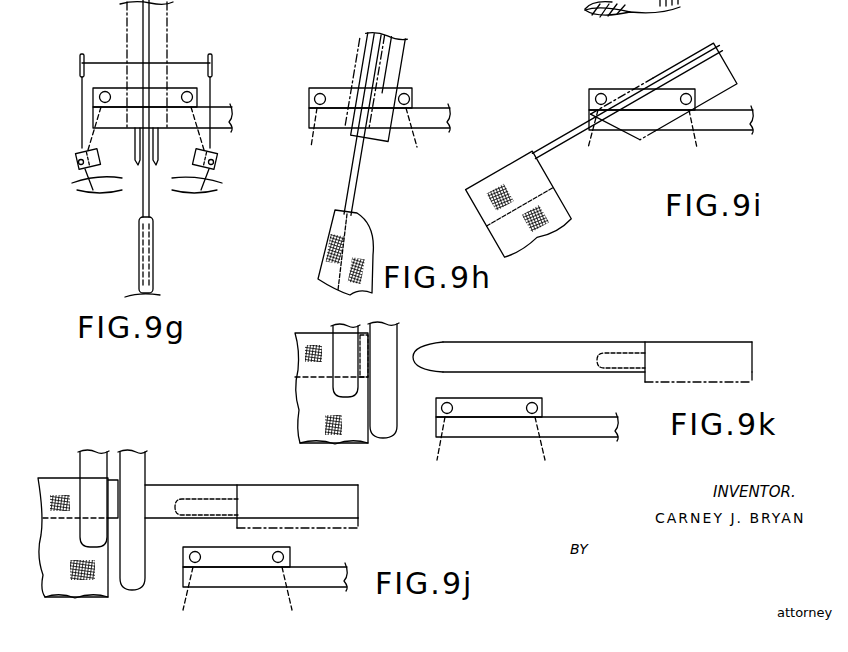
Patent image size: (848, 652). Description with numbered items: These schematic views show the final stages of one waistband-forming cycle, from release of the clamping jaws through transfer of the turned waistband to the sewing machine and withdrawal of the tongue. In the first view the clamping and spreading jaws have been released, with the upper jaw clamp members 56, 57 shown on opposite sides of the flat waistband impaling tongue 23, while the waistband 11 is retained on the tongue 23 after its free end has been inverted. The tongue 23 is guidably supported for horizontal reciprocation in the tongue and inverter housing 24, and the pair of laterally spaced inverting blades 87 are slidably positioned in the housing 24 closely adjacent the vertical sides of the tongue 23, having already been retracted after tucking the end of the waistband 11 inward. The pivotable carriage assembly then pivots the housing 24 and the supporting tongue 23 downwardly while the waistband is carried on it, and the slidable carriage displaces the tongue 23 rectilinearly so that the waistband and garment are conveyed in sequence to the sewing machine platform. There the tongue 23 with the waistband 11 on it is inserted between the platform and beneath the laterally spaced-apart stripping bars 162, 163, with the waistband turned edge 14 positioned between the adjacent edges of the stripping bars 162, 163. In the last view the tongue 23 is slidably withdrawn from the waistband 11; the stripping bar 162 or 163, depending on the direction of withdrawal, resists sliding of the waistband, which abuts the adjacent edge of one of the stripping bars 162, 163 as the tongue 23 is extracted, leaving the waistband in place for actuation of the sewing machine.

In FIG. 9j, the waistband 11 is at (58, 480).
In FIG. 9j, the waistband turned edge 14 is at (120, 500).
In FIG. 9g, the waistband impaling tongue 23 is at (150, 48).
In FIG. 9h, the waistband impaling tongue 23 is at (361, 175).
In FIG. 9i, the waistband impaling tongue 23 is at (604, 148).
In FIG. 9j, the waistband impaling tongue 23 is at (182, 490).
In FIG. 9k, the waistband impaling tongue 23 is at (535, 350).
In FIG. 9g, the tongue and inverter housing 24 is at (126, 50).
In FIG. 9h, the tongue and inverter housing 24 is at (402, 78).
In FIG. 9i, the tongue and inverter housing 24 is at (664, 99).
In FIG. 9j, the tongue and inverter housing 24 is at (297, 506).
In FIG. 9k, the tongue and inverter housing 24 is at (683, 348).
In FIG. 9g, the upper jaw clamp member 56 is at (103, 190).
In FIG. 9g, the upper jaw clamp member 57 is at (190, 190).
In FIG. 9j, the inverting blades 87 is at (207, 498).
In FIG. 9k, the inverting blades 87 is at (625, 354).
In FIG. 9j, the stripping bar 162 is at (92, 455).
In FIG. 9k, the stripping bar 162 is at (337, 332).
In FIG. 9j, the stripping bar 163 is at (134, 455).
In FIG. 9k, the stripping bar 163 is at (390, 335).